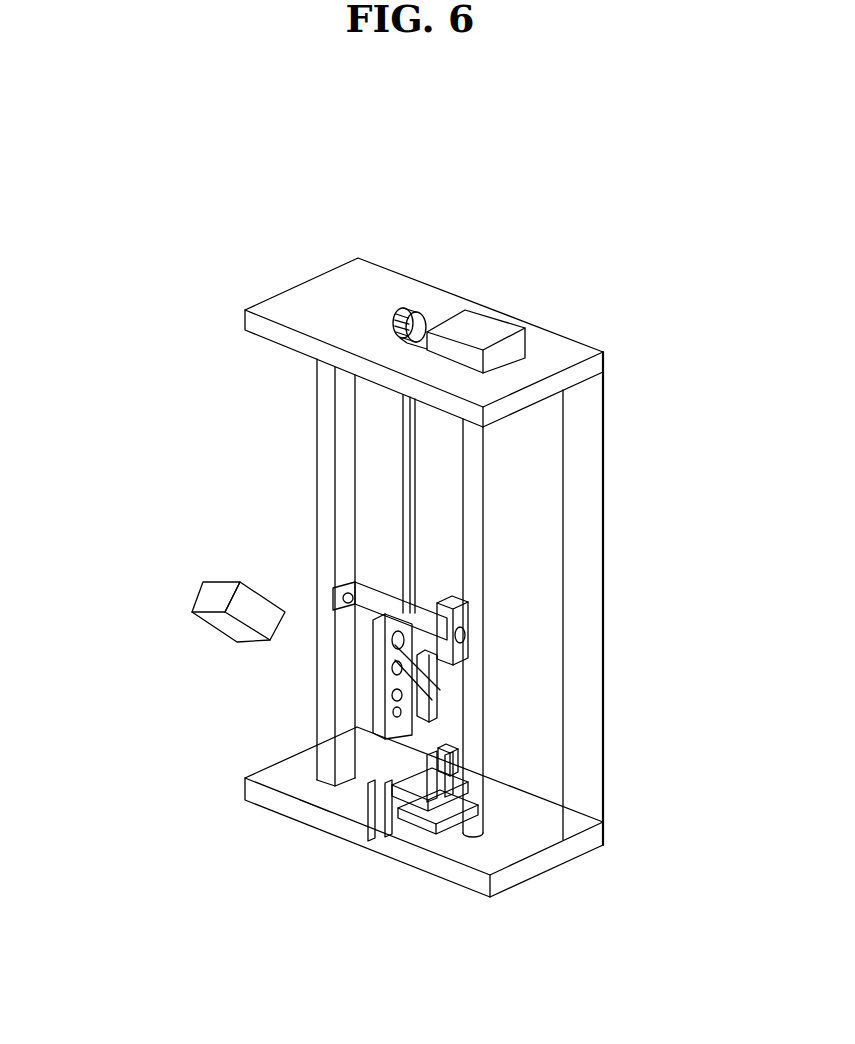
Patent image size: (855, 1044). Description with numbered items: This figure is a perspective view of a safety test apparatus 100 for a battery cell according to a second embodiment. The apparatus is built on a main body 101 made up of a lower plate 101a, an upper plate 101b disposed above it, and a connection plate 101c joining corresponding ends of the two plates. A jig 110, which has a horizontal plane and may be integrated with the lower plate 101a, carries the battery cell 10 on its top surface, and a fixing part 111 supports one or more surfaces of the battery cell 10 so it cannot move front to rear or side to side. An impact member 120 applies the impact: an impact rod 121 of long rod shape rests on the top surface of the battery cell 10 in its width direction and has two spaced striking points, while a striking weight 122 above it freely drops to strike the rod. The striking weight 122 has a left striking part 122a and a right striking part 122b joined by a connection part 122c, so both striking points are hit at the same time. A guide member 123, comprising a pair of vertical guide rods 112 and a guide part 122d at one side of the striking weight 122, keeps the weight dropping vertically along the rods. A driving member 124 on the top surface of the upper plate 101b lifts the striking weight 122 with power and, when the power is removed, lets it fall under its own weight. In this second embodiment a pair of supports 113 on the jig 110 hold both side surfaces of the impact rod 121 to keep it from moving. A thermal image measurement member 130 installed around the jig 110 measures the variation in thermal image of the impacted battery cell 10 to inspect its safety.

The safety test apparatus 100 is at (568, 226).
The main body 101 is at (116, 383).
The lower plate 101a is at (274, 772).
The upper plate 101b is at (247, 337).
The connection plate 101c is at (317, 520).
The driving member 124 is at (484, 330).
The impact member 120 is at (700, 823).
The impact rod 121 is at (483, 822).
The guide member 123 is at (660, 609).
The guide rod 112 is at (480, 585).
The striking weight 122 is at (660, 706).
The left striking part 122a is at (455, 760).
The right striking part 122b is at (438, 707).
The connection part 122c is at (413, 642).
The guide part 122d is at (452, 628).
The support 113 is at (376, 815).
The battery cell 10 is at (416, 835).
The fixing part 111 is at (452, 853).
The jig 110 is at (331, 812).
The thermal image measurement member 130 is at (259, 600).